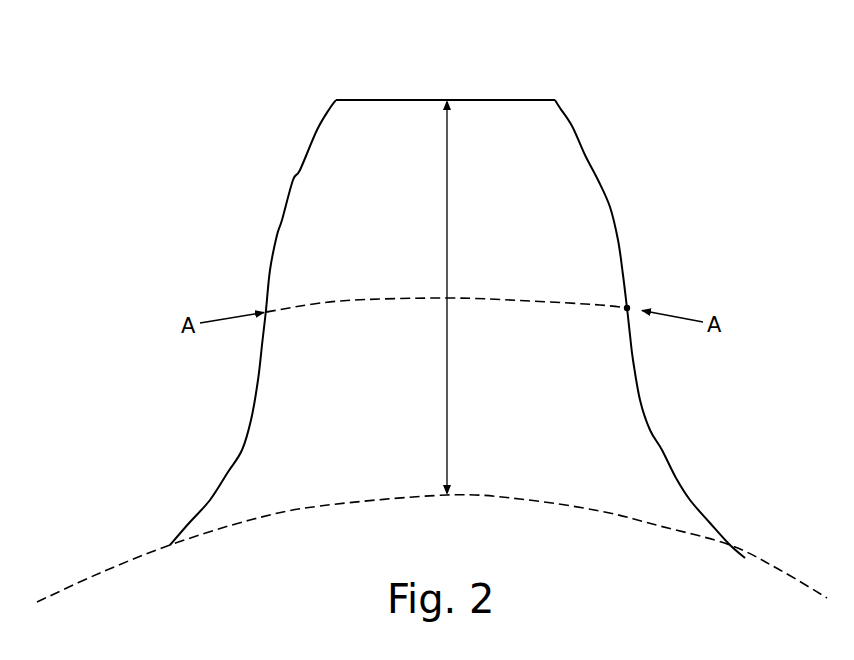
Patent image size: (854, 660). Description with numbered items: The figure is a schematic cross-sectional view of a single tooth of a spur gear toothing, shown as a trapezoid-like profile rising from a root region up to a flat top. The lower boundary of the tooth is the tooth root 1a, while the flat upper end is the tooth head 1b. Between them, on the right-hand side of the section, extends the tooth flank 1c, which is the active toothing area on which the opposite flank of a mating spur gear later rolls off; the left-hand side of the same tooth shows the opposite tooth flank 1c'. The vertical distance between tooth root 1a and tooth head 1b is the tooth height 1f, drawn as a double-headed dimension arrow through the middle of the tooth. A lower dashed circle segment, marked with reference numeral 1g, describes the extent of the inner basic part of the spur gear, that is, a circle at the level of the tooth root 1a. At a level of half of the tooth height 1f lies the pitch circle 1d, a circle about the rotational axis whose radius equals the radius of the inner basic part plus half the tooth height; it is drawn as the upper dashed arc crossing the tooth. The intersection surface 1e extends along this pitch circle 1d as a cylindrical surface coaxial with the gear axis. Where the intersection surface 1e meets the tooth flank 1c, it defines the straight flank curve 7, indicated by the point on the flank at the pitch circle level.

The tooth root 1a is at (728, 543).
The tooth head 1b is at (505, 100).
The tooth flank 1c is at (626, 204).
The opposite tooth flank 1c' is at (263, 205).
The pitch circle 1d is at (325, 305).
The intersection surface 1e is at (598, 306).
The tooth height 1f is at (447, 218).
The extent of the inner basic part 1g is at (105, 570).
The straight flank curve 7 is at (630, 308).